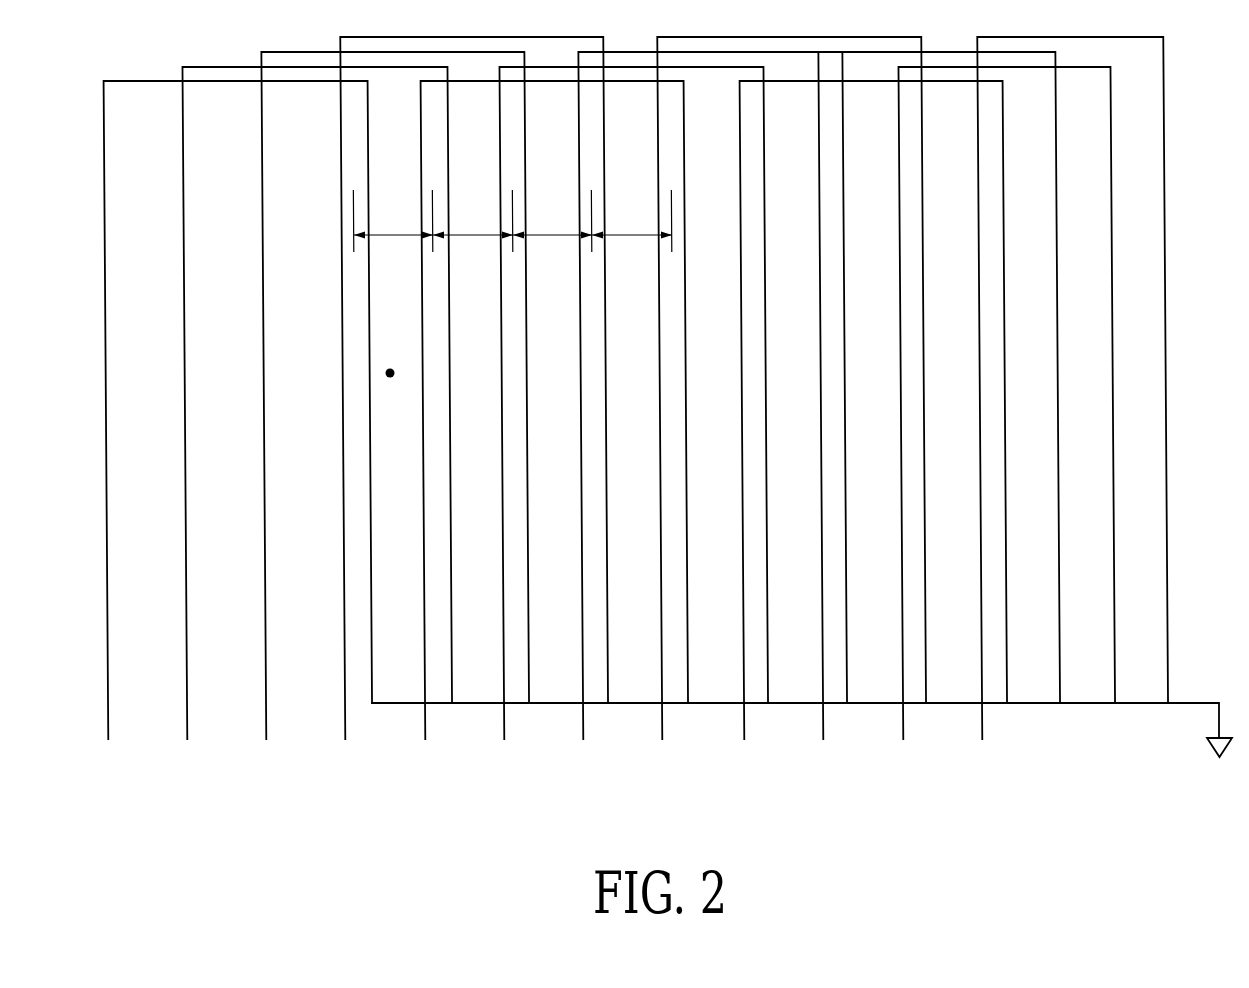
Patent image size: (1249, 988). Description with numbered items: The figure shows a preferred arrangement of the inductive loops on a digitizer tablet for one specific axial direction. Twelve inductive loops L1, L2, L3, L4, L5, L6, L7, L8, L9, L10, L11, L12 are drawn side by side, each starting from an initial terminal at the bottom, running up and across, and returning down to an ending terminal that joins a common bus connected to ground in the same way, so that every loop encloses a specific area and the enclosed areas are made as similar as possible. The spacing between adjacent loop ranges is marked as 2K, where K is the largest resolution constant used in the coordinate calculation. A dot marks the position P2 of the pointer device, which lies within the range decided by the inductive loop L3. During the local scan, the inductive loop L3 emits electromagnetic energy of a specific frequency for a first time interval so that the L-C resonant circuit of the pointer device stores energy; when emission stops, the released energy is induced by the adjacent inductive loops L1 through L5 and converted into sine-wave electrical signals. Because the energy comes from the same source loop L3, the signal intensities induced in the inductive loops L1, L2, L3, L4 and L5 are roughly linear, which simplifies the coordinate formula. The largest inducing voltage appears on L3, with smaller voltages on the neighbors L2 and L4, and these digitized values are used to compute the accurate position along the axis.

The inductive loop L1 is at (235, 434).
The inductive loop L2 is at (315, 427).
The inductive loop L3 is at (393, 420).
The inductive loop L4 is at (472, 412).
The inductive loop L5 is at (552, 434).
The inductive loop L6 is at (631, 427).
The inductive loop L7 is at (710, 420).
The inductive loop L8 is at (789, 412).
The inductive loop L9 is at (871, 434).
The inductive loop L10 is at (937, 420).
The inductive loop L11 is at (1004, 427).
The inductive loop L12 is at (1070, 412).
The position of the pointer device P2 is at (395, 398).
The twice the largest resolution constant 2K is at (512, 221).